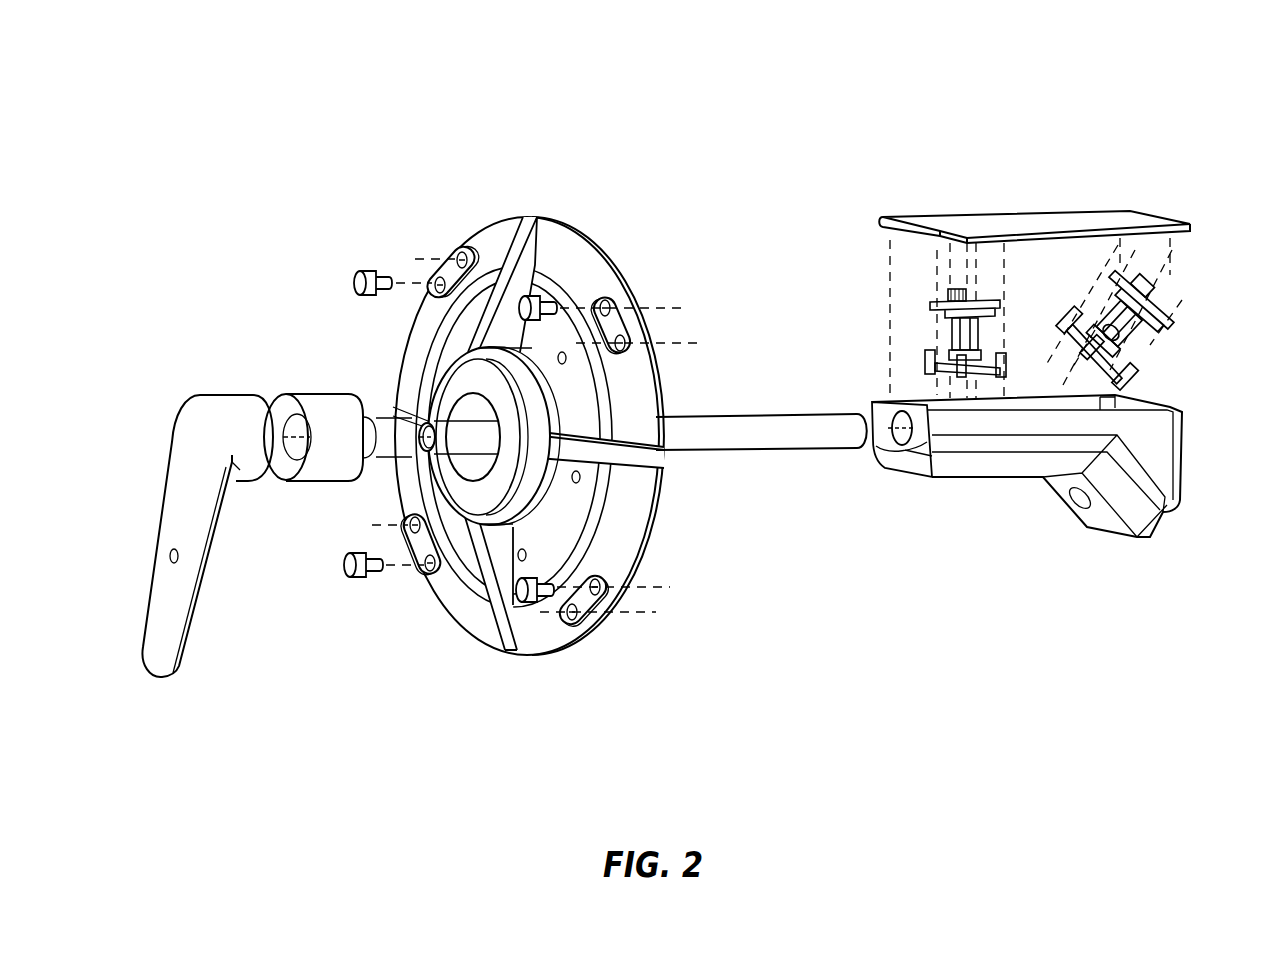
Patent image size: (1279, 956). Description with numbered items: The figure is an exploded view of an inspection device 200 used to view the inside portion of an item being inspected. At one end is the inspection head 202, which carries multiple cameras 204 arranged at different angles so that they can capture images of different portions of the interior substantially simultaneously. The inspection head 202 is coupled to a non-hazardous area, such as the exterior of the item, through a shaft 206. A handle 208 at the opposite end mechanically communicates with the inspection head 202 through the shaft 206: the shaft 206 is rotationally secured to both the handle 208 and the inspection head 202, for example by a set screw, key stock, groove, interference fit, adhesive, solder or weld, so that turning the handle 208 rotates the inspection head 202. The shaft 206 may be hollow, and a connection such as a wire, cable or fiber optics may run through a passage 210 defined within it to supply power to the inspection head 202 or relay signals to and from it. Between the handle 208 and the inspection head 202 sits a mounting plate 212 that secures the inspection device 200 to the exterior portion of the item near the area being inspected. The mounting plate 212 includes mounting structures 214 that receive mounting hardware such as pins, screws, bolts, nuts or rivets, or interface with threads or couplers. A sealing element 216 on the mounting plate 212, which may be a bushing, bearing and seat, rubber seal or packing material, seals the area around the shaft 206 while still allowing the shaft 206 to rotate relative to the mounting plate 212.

The inspection device 200 is at (409, 104).
The inspection head 202 is at (1007, 463).
The cameras 204 is at (945, 312).
The shaft 206 is at (766, 441).
The handle 208 is at (185, 478).
The passage 210 is at (420, 448).
The mounting plate 212 is at (503, 233).
The mounting structures 214 is at (440, 256).
The sealing element 216 is at (338, 413).